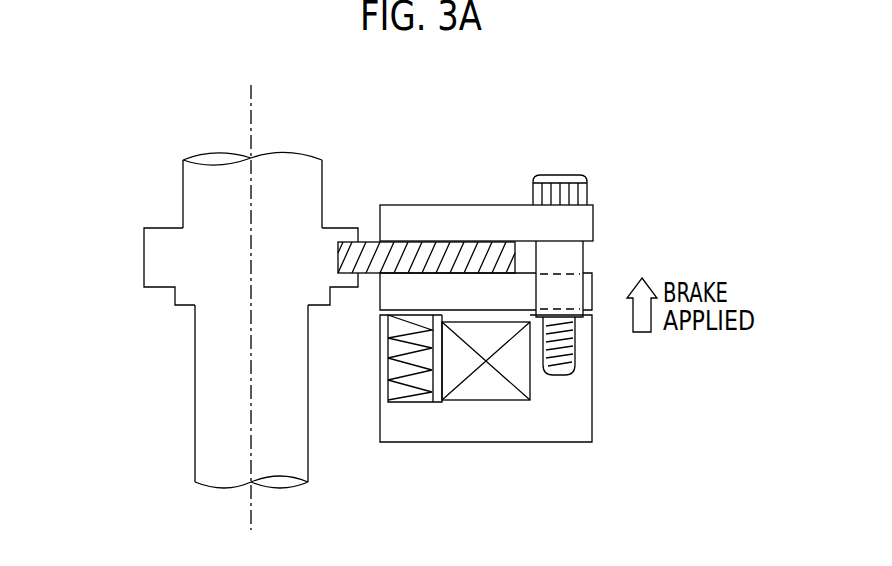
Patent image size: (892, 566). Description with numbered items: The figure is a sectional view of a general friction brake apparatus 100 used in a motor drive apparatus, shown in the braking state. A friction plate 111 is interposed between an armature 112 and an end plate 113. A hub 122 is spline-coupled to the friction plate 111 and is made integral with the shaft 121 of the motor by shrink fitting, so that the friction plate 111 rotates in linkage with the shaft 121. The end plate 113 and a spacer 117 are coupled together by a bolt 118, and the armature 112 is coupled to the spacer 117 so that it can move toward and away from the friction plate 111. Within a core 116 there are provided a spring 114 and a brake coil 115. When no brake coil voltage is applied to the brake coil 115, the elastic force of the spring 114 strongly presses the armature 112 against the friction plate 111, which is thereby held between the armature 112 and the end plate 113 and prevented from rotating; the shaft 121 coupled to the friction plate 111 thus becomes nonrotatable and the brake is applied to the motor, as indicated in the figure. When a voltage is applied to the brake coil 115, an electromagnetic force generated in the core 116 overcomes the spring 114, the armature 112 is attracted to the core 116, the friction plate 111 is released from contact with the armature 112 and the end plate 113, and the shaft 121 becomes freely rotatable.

The friction brake apparatus 100 is at (530, 286).
The friction plate 111 is at (368, 242).
The armature 112 is at (378, 297).
The end plate 113 is at (445, 205).
The spring 114 is at (407, 385).
The brake coil 115 is at (531, 385).
The core 116 is at (593, 423).
The spacer 117 is at (585, 259).
The bolt 118 is at (557, 175).
The shaft 121 is at (182, 177).
The hub 122 is at (338, 227).